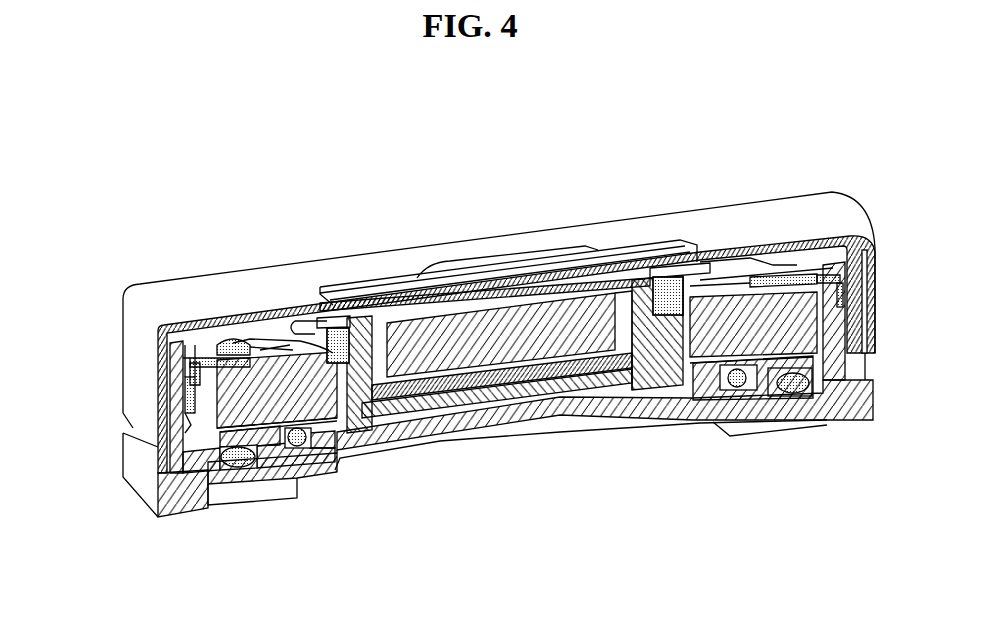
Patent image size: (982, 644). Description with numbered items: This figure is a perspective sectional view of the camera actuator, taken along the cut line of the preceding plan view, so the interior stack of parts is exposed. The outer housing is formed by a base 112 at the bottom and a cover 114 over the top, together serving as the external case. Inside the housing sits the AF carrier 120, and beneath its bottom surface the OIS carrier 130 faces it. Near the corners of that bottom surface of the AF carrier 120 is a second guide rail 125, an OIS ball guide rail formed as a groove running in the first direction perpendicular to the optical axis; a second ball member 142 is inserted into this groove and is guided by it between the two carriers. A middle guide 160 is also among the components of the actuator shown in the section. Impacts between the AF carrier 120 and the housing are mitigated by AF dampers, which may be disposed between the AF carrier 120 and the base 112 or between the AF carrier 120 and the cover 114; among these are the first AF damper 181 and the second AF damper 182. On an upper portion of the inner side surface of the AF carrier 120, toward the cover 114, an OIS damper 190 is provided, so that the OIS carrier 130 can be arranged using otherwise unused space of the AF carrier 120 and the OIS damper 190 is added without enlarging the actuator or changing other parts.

The base 112 is at (180, 512).
The cover 114 is at (138, 312).
The AF carrier 120 is at (285, 485).
The second guide rail 125 is at (293, 448).
The OIS carrier 130 is at (308, 322).
The second ball member 142 is at (312, 468).
The middle guide 160 is at (238, 470).
The first AF damper 181 is at (240, 343).
The second AF damper 182 is at (187, 393).
The OIS damper 190 is at (345, 330).